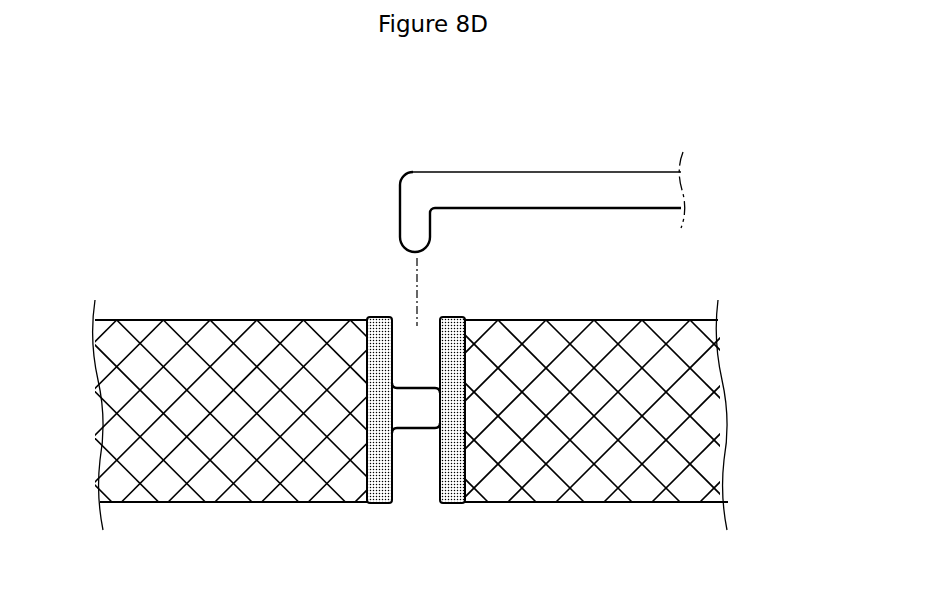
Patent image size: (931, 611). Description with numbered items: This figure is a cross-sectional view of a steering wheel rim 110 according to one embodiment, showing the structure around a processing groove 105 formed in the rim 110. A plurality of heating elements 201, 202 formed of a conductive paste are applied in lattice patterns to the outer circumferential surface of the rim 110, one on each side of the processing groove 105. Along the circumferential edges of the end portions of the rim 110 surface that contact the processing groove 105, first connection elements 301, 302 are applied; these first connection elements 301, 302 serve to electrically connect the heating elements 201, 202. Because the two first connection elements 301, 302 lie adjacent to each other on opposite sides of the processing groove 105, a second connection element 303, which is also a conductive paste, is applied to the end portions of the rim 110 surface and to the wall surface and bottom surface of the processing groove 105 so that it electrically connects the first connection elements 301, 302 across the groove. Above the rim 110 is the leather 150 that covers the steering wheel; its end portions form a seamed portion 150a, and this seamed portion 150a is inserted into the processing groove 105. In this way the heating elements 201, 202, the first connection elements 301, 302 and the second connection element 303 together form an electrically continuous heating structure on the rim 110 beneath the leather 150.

The processing groove 105 is at (416, 411).
The rim 110 is at (176, 318).
The leather 150 is at (483, 162).
The seamed portion 150a is at (398, 202).
The heating element 201 is at (195, 473).
The heating element 202 is at (650, 473).
The first connection element 301 is at (375, 505).
The first connection element 302 is at (462, 503).
The second connection element 303 is at (420, 388).